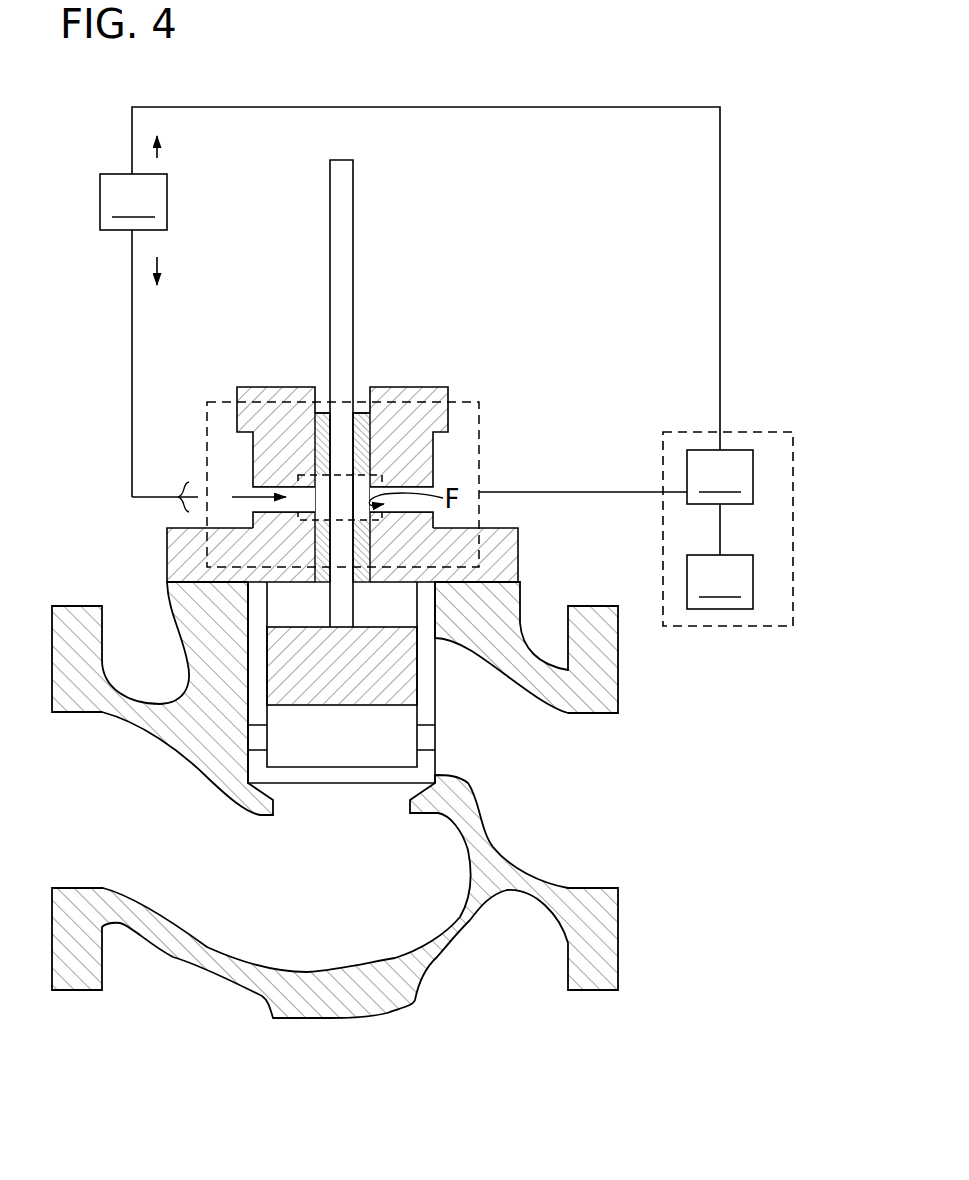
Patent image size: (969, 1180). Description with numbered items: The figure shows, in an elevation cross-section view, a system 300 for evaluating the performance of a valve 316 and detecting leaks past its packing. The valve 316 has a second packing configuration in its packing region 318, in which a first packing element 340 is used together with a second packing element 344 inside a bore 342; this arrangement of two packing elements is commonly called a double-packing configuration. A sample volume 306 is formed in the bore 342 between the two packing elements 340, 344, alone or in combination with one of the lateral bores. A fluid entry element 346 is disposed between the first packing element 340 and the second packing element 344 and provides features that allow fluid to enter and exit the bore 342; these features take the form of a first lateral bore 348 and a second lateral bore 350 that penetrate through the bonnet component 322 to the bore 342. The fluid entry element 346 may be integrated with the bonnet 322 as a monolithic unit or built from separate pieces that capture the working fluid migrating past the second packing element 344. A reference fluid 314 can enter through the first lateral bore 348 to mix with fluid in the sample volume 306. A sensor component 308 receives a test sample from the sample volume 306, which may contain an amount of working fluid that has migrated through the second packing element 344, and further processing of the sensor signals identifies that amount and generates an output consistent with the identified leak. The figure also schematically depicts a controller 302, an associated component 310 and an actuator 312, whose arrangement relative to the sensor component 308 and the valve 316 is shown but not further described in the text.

The system 300 is at (633, 54).
The controller 302 is at (680, 430).
The sample volume 306 is at (374, 472).
The sensor component 308 is at (720, 477).
The memory 310 is at (720, 582).
The actuator 312 is at (133, 202).
The reference fluid 314 is at (157, 157).
The valve 316 is at (640, 1061).
The packing region 318 is at (294, 452).
The bonnet component 322 is at (165, 563).
The first packing element 340 is at (372, 438).
The bore 342 is at (322, 402).
The second packing element 344 is at (362, 540).
The fluid entry element 346 is at (183, 491).
The first lateral bore 348 is at (225, 478).
The second lateral bore 350 is at (445, 484).